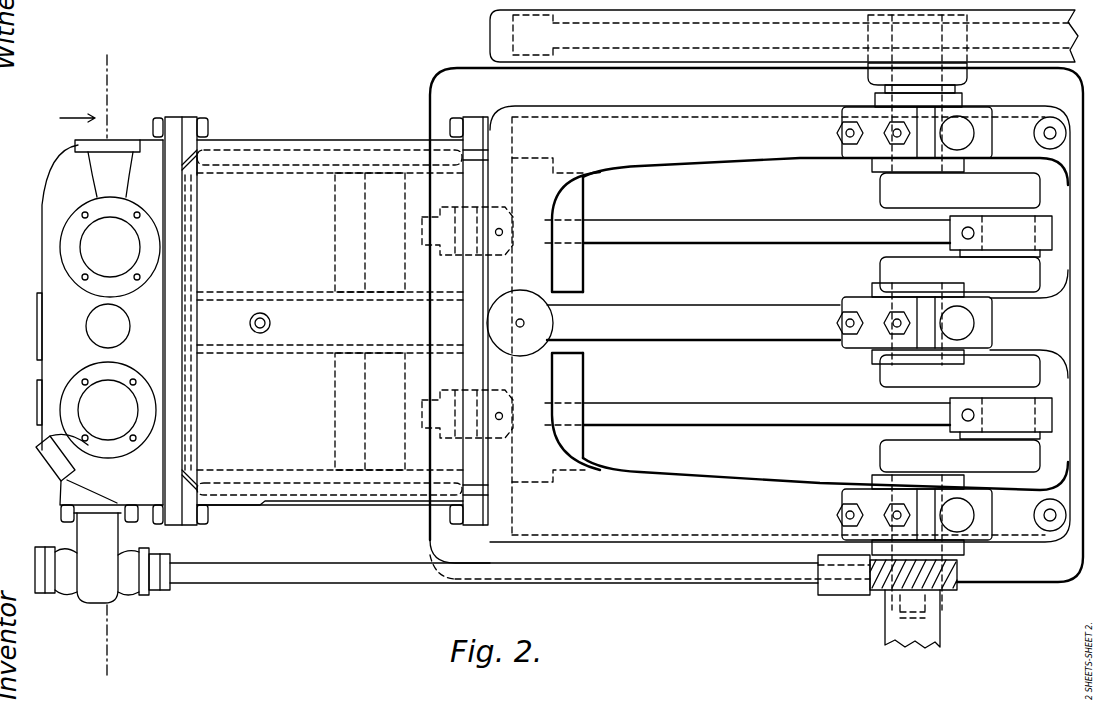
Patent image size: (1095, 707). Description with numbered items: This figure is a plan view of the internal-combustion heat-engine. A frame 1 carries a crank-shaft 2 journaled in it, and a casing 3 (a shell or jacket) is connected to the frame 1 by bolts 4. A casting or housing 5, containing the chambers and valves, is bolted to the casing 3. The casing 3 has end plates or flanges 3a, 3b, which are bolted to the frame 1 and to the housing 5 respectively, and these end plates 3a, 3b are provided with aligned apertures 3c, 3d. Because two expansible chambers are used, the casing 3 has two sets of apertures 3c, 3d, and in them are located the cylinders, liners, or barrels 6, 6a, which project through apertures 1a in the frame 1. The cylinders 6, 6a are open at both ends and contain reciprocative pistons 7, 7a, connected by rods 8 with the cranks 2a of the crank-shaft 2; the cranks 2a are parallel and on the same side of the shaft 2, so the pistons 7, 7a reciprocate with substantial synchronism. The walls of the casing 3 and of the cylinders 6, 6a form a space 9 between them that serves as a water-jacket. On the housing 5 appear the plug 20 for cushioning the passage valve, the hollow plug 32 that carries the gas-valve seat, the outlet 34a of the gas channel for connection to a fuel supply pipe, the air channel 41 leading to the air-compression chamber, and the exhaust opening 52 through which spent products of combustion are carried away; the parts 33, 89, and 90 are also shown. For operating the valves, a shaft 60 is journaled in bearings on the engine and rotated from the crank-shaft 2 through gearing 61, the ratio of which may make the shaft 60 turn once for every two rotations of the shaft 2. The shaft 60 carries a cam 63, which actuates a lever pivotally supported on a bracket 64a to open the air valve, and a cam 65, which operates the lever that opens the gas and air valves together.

The frame 1 is at (756, 325).
The apertures in frame 1a is at (500, 158).
The crank-shaft 2 is at (900, 72).
The cranks 2a is at (1010, 458).
The casing 3 is at (355, 310).
The end plate 3a is at (190, 122).
The end plate 3b is at (474, 120).
The aperture 3c is at (196, 149).
The aperture 3d is at (480, 151).
The bolts 4 is at (448, 533).
The casting or housing 5 is at (102, 322).
The cylinder or liner 6 is at (237, 470).
The cylinder or liner 6a is at (240, 294).
The piston 7 is at (467, 411).
The piston 7a is at (354, 245).
The rods 8 is at (698, 242).
The space 9 is at (300, 497).
The plug 20 is at (125, 326).
The hollow plug 32 is at (72, 395).
The port 33 is at (108, 410).
The outlet 34a is at (128, 478).
The channel 41 is at (126, 143).
The opening 52 is at (37, 335).
The shaft 60 is at (520, 587).
The gearing 61 is at (952, 590).
The cam 63 is at (143, 598).
The bracket 64a is at (118, 543).
The cam 65 is at (165, 595).
The bearing cap 89 is at (48, 560).
The lug 90 is at (37, 390).